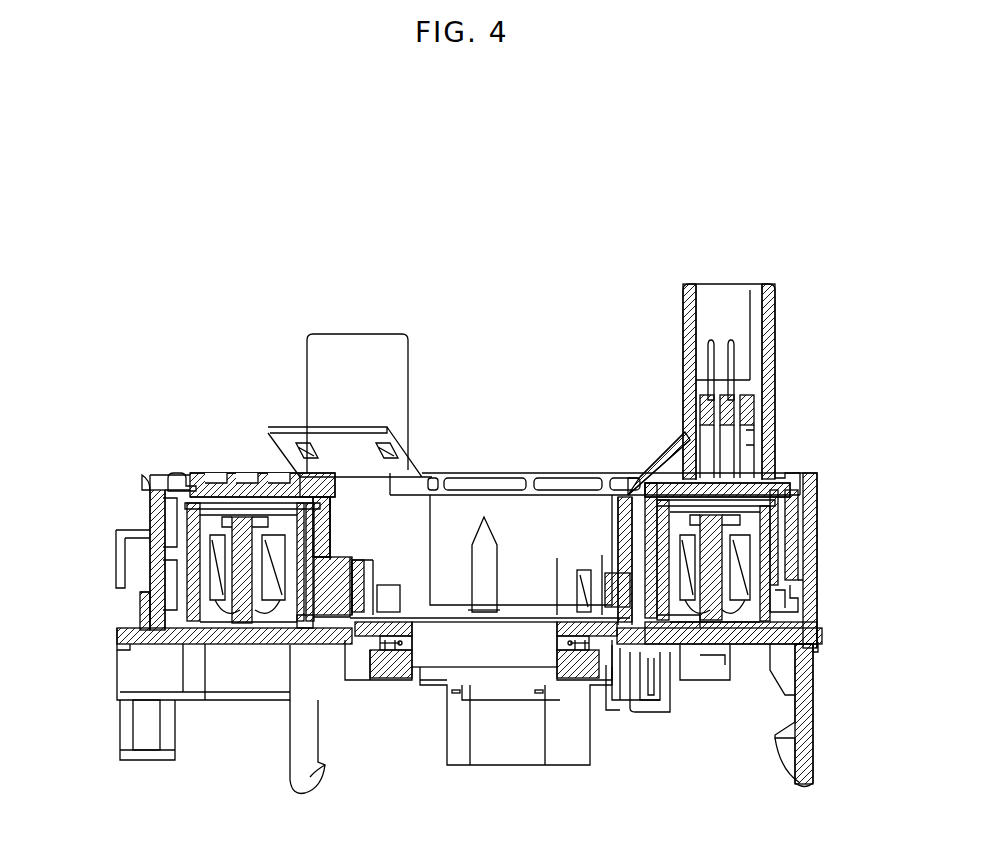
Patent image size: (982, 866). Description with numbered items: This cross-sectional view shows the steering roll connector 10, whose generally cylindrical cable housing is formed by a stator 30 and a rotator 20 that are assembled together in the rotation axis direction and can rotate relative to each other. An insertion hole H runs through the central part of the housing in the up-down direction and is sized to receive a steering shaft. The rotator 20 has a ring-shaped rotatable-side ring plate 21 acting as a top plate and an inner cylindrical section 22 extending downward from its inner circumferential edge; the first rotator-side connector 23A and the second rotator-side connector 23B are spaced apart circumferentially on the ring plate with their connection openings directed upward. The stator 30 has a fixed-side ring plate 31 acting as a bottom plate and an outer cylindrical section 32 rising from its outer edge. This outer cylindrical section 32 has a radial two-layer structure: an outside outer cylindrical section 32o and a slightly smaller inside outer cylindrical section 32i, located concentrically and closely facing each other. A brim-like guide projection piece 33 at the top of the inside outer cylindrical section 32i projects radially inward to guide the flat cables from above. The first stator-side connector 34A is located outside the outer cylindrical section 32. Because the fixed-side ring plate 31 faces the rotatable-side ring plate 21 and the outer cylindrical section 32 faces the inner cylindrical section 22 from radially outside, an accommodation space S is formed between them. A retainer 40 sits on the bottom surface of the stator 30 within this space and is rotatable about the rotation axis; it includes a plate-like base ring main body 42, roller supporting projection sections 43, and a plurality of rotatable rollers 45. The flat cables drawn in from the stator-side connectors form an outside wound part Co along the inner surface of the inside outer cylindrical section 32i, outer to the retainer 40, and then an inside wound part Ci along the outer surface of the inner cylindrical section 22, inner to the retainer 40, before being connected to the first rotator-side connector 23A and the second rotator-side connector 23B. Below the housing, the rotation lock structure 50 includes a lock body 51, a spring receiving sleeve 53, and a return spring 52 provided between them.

The steering roll connector 10 is at (218, 300).
The rotator 20 is at (495, 470).
The rotatable-side ring plate 21 is at (192, 473).
The inner cylindrical section 22 is at (335, 545).
The first rotator-side connector 23A is at (361, 333).
The second rotator-side connector 23B is at (720, 283).
The stator 30 is at (222, 715).
The fixed-side ring plate 31 is at (205, 692).
The outer cylindrical section 32 is at (70, 508).
The outside outer cylindrical section 32o is at (148, 525).
The inside outer cylindrical section 32i is at (165, 600).
The guide projection piece 33 is at (182, 472).
The first stator-side connector 34A is at (115, 680).
The retainer 40 is at (785, 607).
The base ring main body 42 is at (300, 627).
The roller supporting projection sections 43 is at (210, 605).
The rotatable rollers 45 is at (778, 540).
The rotation lock structure 50 is at (350, 765).
The lock body 51 is at (395, 625).
The return spring 52 is at (400, 650).
The spring receiving sleeve 53 is at (372, 665).
The insertion hole H is at (546, 545).
The accommodation space S is at (772, 478).
The inside wound part Ci is at (622, 520).
The outside wound part Co is at (795, 565).